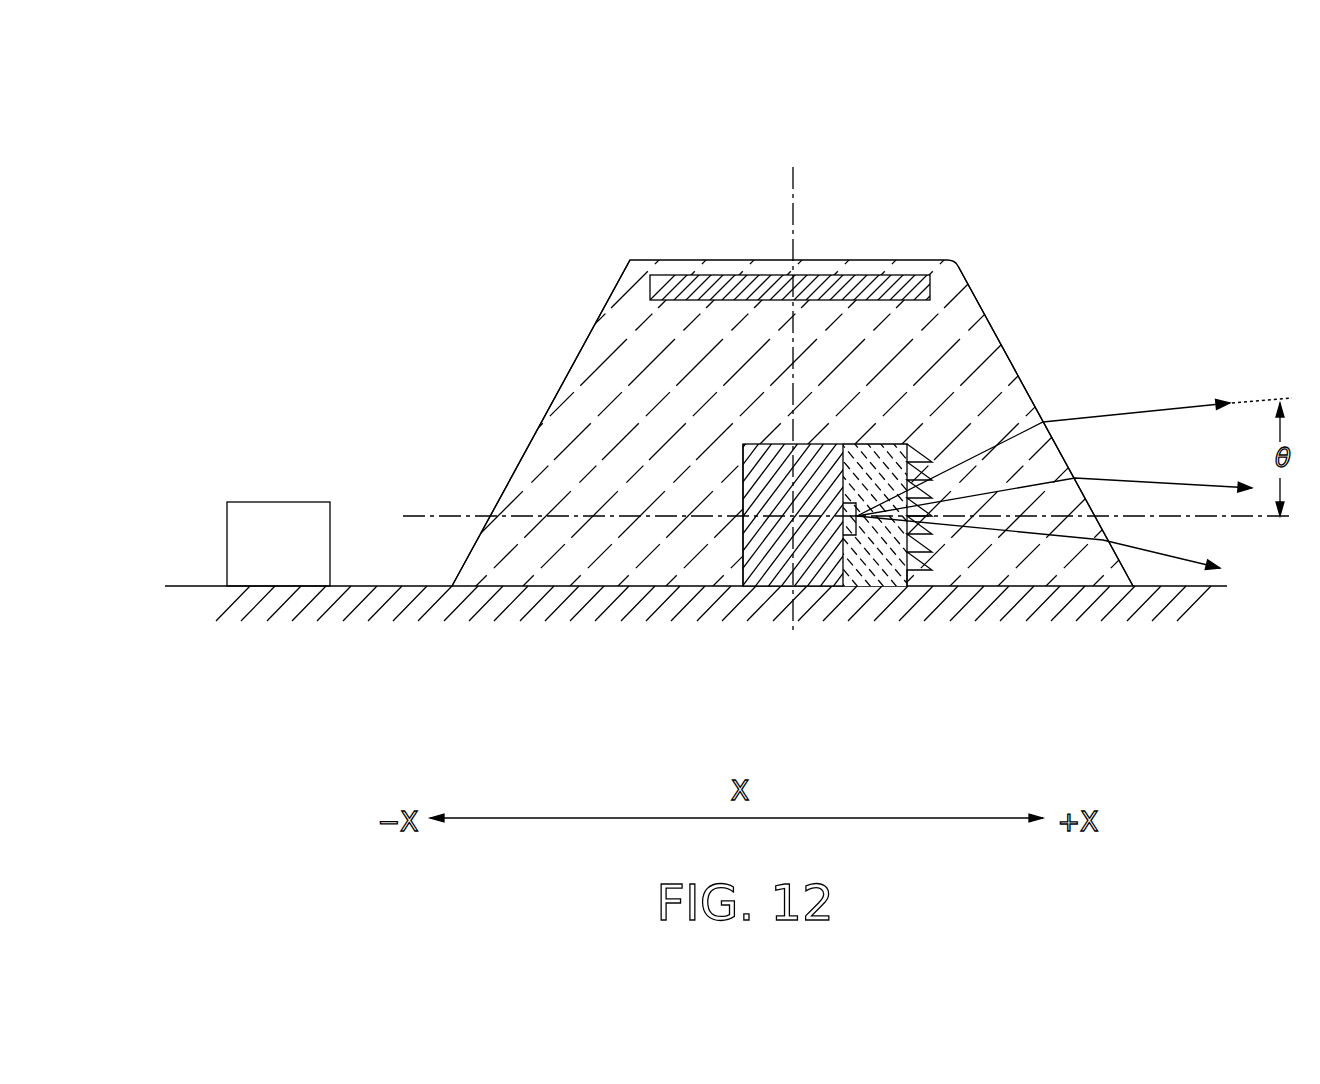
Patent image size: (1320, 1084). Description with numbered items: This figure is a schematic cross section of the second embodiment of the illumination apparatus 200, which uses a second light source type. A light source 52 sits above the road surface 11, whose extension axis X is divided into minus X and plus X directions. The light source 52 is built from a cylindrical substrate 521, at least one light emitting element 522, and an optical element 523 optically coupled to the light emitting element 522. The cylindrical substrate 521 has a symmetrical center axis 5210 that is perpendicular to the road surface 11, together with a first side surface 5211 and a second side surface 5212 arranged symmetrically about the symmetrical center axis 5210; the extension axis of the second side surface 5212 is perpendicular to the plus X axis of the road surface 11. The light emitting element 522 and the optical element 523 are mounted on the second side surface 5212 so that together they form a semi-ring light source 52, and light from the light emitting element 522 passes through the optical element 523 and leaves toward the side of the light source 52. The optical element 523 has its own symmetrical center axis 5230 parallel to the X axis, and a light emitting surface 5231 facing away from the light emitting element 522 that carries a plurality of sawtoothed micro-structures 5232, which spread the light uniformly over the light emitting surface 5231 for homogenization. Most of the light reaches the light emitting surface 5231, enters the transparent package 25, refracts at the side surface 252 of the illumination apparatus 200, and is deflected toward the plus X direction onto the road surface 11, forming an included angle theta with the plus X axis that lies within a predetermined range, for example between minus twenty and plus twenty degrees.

The illumination apparatus 200 is at (551, 192).
The road surface 11 is at (205, 586).
The transparent package 25 is at (632, 356).
The side surface 252 is at (562, 383).
The light source 52 is at (819, 604).
The cylindrical substrate 521 is at (772, 572).
The first side surface 5211 is at (740, 543).
The light emitting element 522 is at (856, 535).
The optical element 523 is at (932, 578).
The symmetrical center axis 5210 is at (793, 200).
The symmetrical center axis 5230 is at (453, 513).
The second side surface 5212 is at (990, 328).
The light emitting surface 5231 is at (912, 443).
The sawtoothed micro-structures 5232 is at (932, 461).